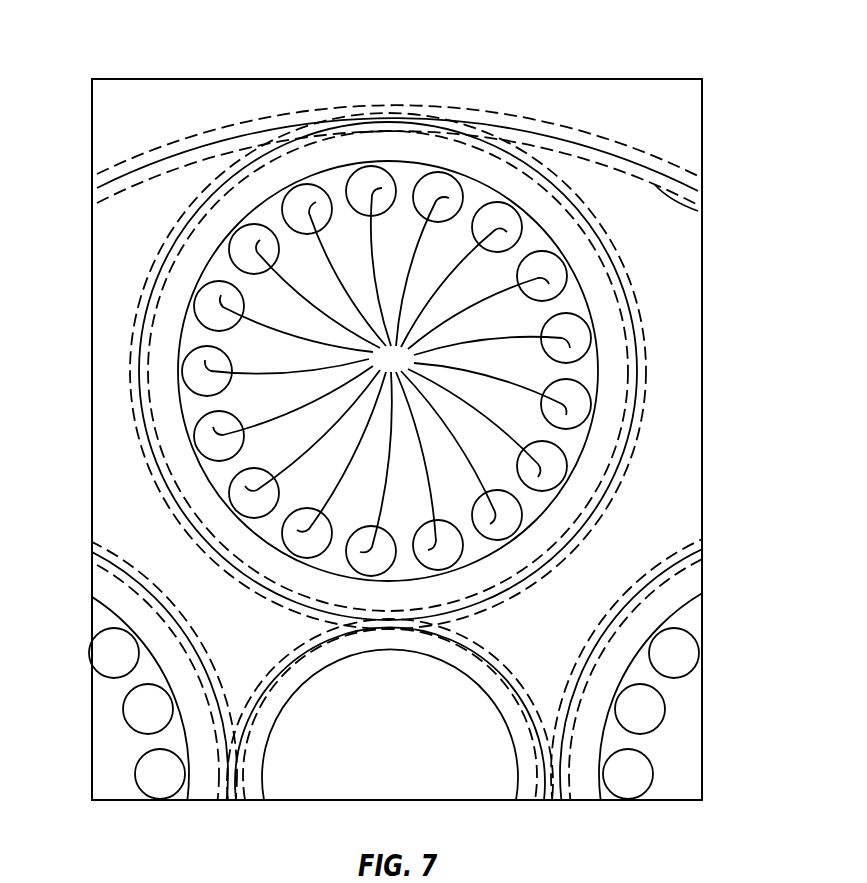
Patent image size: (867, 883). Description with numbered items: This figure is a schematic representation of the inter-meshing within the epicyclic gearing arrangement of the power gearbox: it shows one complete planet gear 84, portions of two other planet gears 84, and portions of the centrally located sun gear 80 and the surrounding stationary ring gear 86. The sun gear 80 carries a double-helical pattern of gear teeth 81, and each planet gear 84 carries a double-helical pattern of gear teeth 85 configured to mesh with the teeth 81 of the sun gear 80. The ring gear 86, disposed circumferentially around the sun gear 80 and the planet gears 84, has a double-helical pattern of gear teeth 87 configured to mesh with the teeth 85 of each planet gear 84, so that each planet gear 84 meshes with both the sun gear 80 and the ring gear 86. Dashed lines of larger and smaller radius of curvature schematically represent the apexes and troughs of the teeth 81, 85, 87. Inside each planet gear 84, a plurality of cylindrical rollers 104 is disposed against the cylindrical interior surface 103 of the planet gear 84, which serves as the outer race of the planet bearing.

The sun gear 80 is at (525, 763).
The gear teeth of the sun gear 81 is at (481, 627).
The planet gear 84 is at (603, 300).
The gear teeth of the planet gear 85 is at (593, 213).
The ring gear 86 is at (523, 88).
The gear teeth of the ring gear 87 is at (698, 210).
The cylindrical interior surface 103 is at (592, 368).
The cylindrical rollers 104 is at (745, 727).